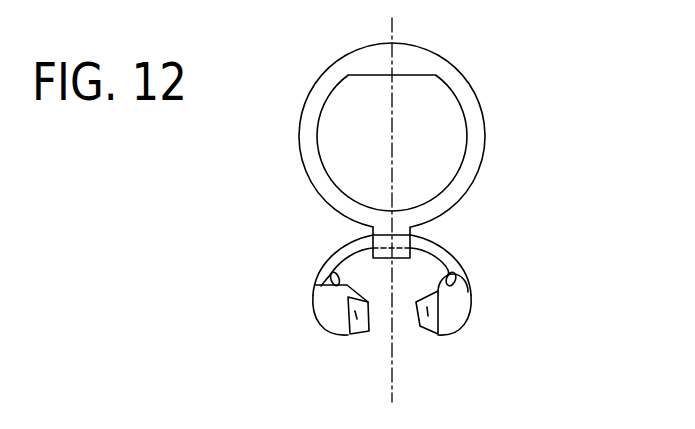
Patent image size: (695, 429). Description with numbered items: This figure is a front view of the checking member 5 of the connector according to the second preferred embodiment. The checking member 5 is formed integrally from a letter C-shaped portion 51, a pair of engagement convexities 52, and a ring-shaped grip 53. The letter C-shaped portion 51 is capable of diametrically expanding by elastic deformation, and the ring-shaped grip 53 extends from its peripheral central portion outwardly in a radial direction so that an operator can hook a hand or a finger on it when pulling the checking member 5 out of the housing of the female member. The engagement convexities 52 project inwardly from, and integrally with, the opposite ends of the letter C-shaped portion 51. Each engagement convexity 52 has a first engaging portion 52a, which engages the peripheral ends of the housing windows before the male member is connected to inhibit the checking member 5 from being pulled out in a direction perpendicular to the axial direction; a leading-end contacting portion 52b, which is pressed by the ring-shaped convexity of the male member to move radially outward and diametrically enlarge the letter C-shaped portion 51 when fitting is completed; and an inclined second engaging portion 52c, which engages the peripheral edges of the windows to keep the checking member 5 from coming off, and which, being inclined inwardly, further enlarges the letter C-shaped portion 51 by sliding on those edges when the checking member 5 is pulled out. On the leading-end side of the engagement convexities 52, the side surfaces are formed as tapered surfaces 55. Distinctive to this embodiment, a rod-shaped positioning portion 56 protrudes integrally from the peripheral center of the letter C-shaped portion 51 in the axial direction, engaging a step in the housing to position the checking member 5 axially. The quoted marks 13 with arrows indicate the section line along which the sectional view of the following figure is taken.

The checking member 5 is at (496, 115).
The section line for FIG. 13 is at (392, 37).
The letter C-shaped portion 51 is at (425, 259).
The engagement convexity 52 is at (457, 314).
The first engaging portion 52a is at (328, 272).
The leading-end contacting portion 52b is at (373, 318).
The inclined second engaging portion 52c is at (345, 258).
The ring-shaped grip 53 is at (474, 142).
The tapered surface 55 is at (452, 274).
The positioning portion 56 is at (420, 246).